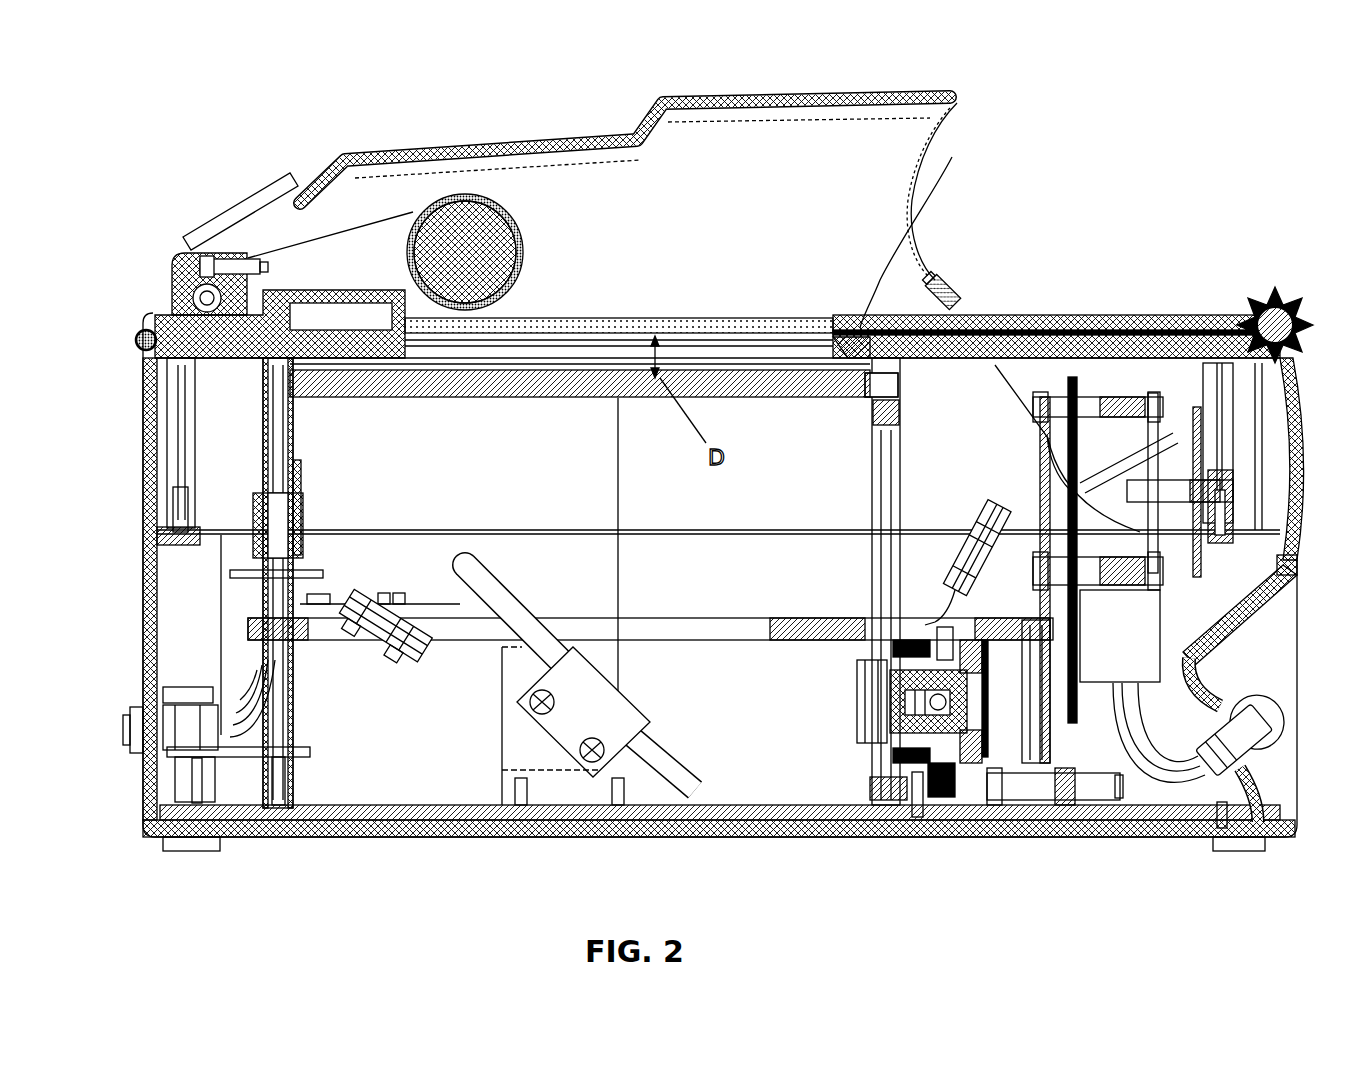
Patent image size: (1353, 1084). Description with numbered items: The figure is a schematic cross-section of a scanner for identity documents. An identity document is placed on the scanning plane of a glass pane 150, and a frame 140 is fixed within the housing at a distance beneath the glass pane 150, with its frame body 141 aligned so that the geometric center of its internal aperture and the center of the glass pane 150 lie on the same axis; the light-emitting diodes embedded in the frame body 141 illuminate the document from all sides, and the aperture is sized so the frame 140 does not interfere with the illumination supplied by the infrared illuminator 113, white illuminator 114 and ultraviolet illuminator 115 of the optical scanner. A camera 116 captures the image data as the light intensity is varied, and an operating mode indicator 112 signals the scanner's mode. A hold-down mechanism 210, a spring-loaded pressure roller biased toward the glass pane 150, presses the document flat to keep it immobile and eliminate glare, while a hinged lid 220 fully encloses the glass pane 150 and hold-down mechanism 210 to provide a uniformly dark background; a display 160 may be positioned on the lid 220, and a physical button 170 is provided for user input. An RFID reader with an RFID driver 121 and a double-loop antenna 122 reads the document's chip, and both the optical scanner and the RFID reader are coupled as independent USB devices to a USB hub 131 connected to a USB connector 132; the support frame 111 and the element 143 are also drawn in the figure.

The support frame 111 is at (1072, 700).
The operating mode indicator 112 is at (1280, 300).
The infrared illuminator 113 is at (990, 512).
The white illuminator 114 is at (655, 745).
The ultraviolet illuminator 115 is at (352, 598).
The camera 116 is at (985, 770).
The RFID driver 121 is at (1193, 410).
The double-loop antenna 122 is at (952, 157).
The USB hub 131 is at (232, 752).
The USB connector 132 is at (148, 735).
The frame 140 is at (573, 372).
The frame body 141 is at (898, 385).
The sensor 143 is at (881, 385).
The glass pane 150 is at (590, 330).
The display 160 is at (225, 215).
The physical button 170 is at (145, 330).
The hold-down mechanism 210 is at (420, 210).
The lid 220 is at (690, 118).